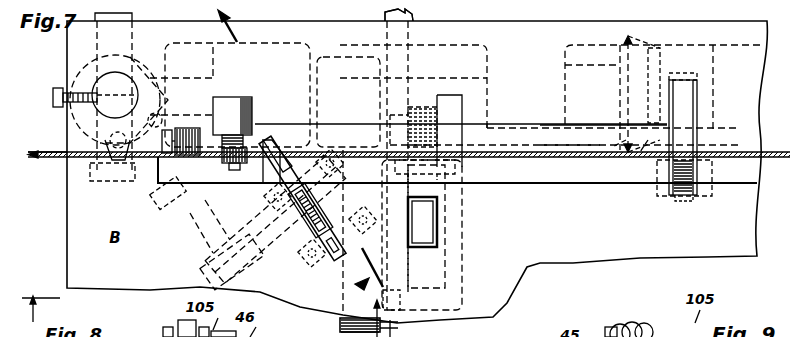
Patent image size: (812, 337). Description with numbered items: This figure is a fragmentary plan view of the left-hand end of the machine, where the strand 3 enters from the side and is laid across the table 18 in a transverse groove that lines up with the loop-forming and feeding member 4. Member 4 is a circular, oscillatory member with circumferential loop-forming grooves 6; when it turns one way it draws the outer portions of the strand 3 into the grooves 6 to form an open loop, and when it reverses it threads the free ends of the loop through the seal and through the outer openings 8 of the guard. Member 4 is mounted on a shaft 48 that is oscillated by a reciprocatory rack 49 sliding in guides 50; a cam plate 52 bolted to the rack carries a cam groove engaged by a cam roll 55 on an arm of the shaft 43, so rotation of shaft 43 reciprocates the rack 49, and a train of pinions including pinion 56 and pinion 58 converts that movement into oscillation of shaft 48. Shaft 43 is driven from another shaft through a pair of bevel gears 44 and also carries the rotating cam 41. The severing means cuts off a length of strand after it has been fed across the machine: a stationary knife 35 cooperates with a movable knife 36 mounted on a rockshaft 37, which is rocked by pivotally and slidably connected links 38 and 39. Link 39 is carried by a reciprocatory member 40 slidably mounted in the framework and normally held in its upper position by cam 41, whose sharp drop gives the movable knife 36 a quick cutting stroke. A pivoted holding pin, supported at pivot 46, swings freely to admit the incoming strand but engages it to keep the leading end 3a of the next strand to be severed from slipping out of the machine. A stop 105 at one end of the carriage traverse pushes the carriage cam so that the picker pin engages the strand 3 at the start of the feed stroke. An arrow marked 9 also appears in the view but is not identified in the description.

The strand 3 is at (520, 170).
The leading end of strand 3a is at (48, 160).
The loop-forming and feeding member 4 is at (683, 116).
The circumferential loop-forming grooves 6 is at (672, 108).
The outer openings of guard 8 is at (211, 303).
The section line 9 is at (291, 148).
The table 18 is at (546, 183).
The stationary knife 35 is at (268, 140).
The movable knife 36 is at (308, 248).
The rockshaft 37 is at (255, 230).
The link 38 is at (210, 238).
The link 39 is at (142, 183).
The reciprocatory member 40 is at (75, 60).
The rotating cam 41 is at (97, 184).
The shaft 43 is at (660, 60).
The pair of bevel gears 44 is at (642, 172).
The pivot of holding device 46 is at (241, 97).
The shaft 48 is at (591, 170).
The reciprocatory rack 49 is at (425, 226).
The guides 50 is at (452, 258).
The cam plate 52 is at (413, 24).
The cam roll 55 is at (410, 322).
The pinion 56 is at (456, 172).
The pinion 58 is at (420, 108).
The stop 105 is at (200, 204).